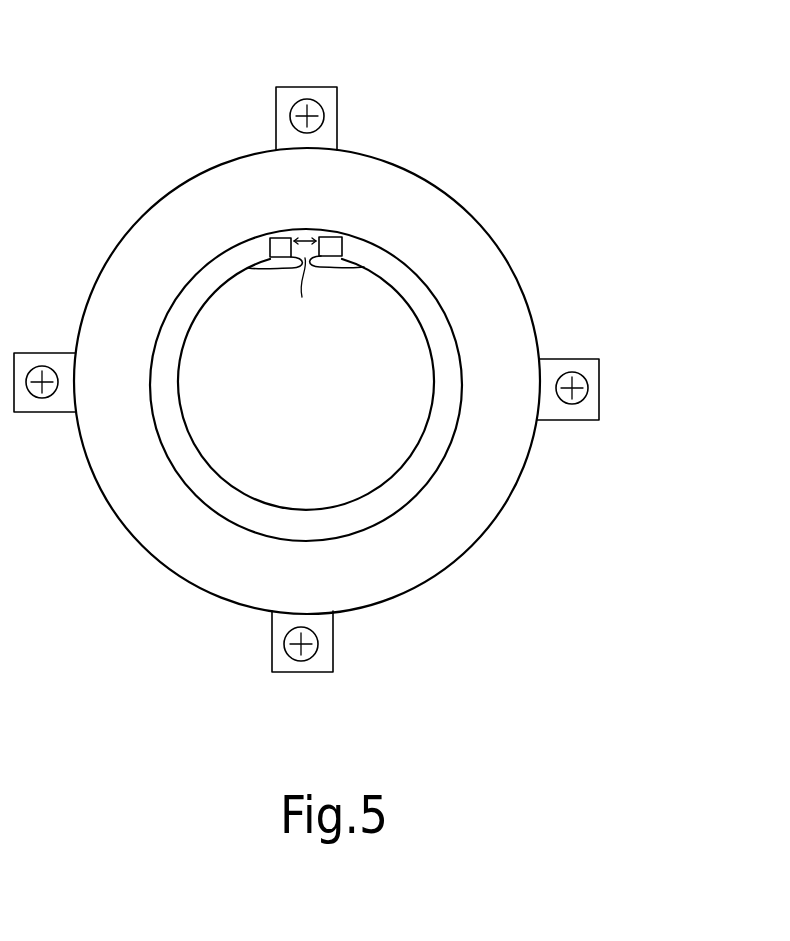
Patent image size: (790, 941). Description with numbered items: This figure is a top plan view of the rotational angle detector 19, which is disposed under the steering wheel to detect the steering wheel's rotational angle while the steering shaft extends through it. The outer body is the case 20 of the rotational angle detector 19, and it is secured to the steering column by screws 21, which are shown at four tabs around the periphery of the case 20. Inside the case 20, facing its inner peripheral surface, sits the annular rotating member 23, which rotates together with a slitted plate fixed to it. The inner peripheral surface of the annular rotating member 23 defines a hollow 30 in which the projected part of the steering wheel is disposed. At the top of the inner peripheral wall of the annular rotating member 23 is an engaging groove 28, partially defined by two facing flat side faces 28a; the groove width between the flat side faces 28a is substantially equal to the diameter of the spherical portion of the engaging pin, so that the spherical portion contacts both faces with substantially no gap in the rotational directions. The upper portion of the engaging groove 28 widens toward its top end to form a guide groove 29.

The rotational angle detector 19 is at (353, 358).
The case 20 is at (522, 323).
The screws 21 is at (323, 110).
The annular rotating member 23 is at (426, 297).
The engaging groove 28 is at (308, 230).
The flat side faces 28a is at (258, 266).
The guide groove 29 is at (282, 240).
The hollow 30 is at (418, 415).